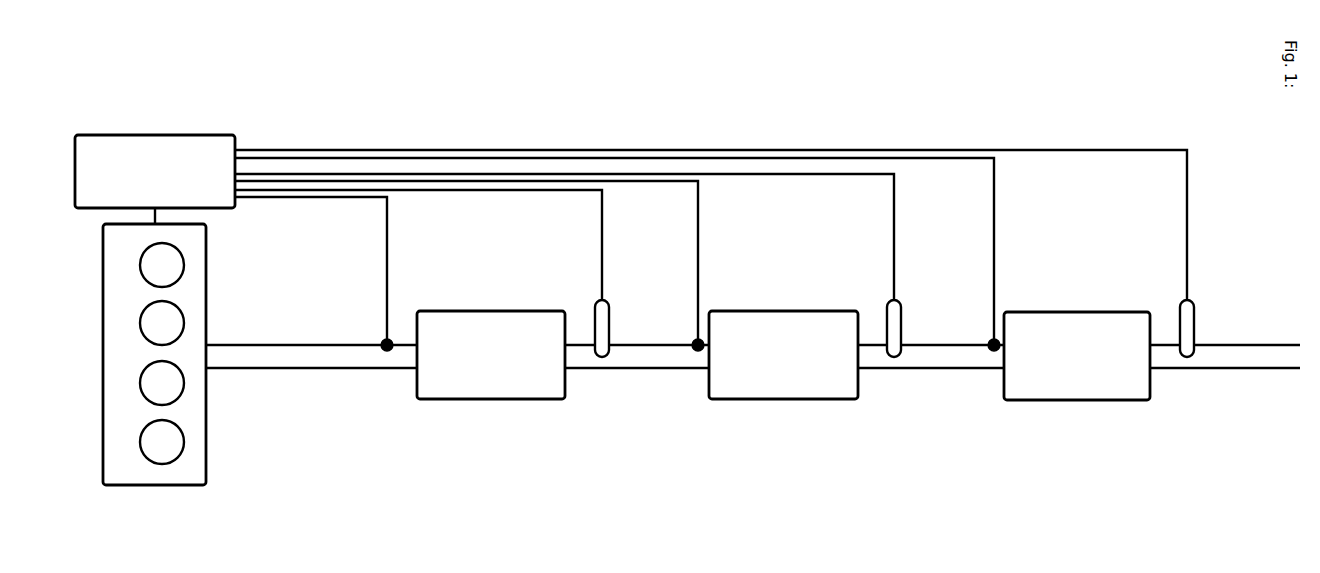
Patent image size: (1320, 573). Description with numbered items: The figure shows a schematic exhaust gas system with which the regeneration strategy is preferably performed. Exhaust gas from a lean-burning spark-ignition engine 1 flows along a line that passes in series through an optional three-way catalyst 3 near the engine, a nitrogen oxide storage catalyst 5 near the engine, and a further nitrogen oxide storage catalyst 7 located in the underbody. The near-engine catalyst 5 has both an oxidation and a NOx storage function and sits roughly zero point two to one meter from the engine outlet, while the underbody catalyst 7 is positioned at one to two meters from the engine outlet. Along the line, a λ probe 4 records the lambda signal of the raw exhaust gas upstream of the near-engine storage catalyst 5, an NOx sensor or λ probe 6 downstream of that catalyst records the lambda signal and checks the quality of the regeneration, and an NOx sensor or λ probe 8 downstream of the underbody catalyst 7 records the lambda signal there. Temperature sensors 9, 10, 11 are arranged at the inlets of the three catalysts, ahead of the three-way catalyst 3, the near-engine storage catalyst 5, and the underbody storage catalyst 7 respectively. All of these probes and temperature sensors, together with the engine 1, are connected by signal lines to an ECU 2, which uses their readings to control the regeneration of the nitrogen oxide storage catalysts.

The lean-burning spark-ignition engine 1 is at (154, 354).
The ECU 2 is at (155, 171).
The optional three-way catalyst near the engine 3 is at (491, 355).
The λ probe 4 is at (428, 273).
The nitrogen oxide storage catalyst near the engine 5 is at (783, 355).
The NOx sensor or λ probe 6 is at (573, 265).
The nitrogen oxide storage catalyst located in the underbody 7 is at (1077, 356).
The NOx sensor or λ probe 8 is at (720, 253).
The temperature sensor 9 is at (314, 274).
The temperature sensor 10 is at (469, 266).
The temperature sensor 11 is at (617, 254).